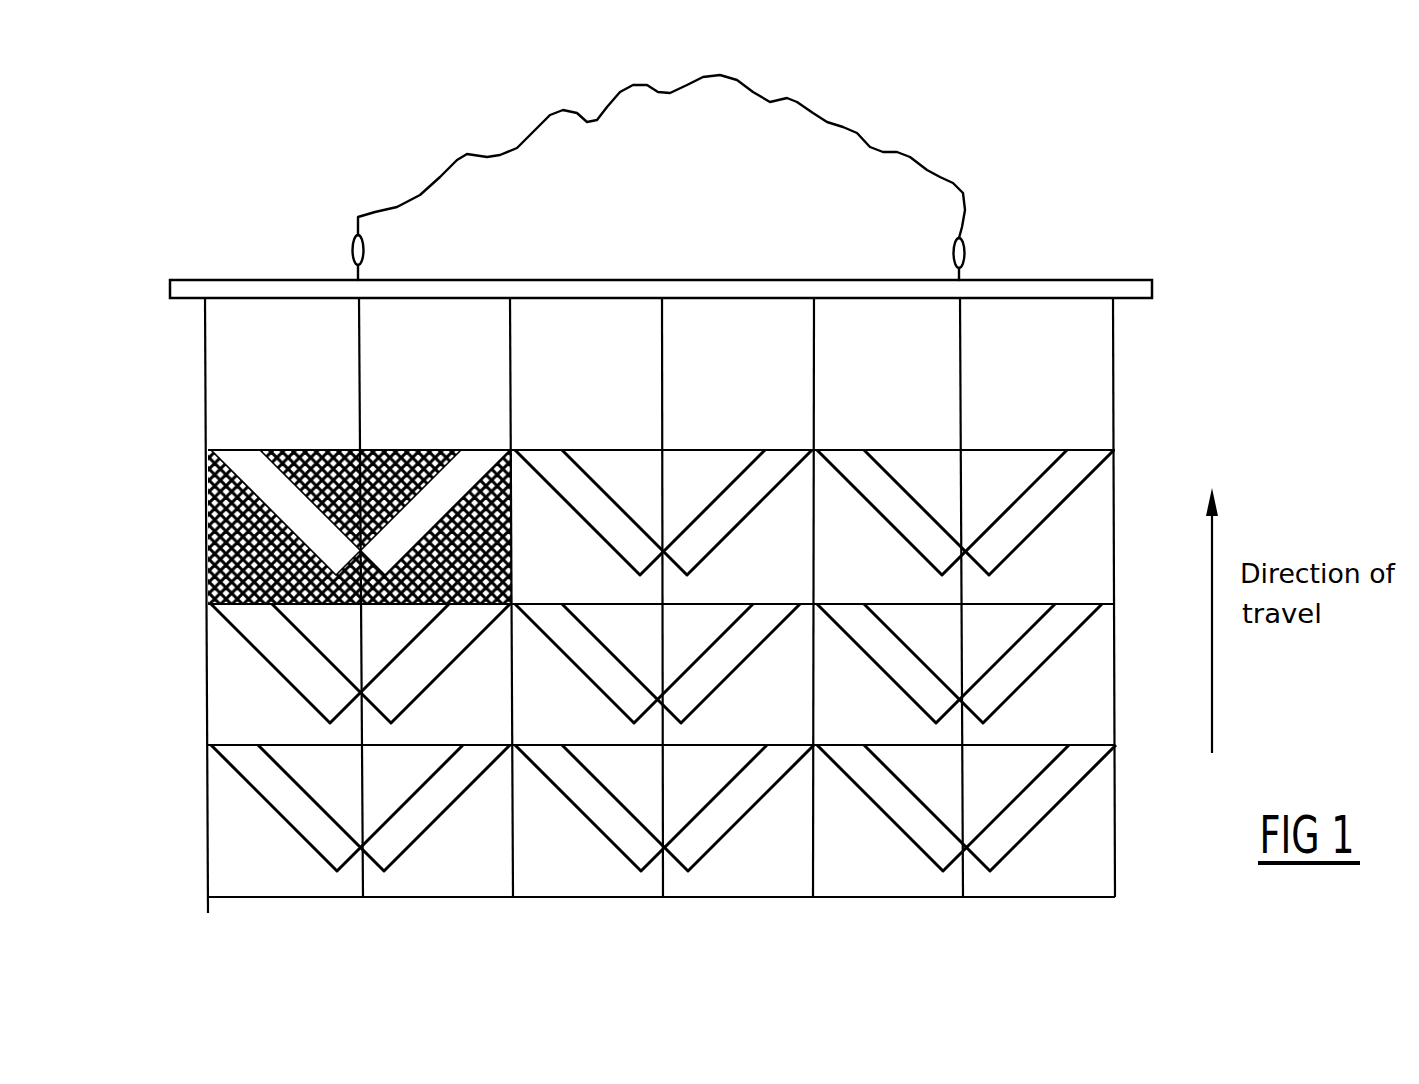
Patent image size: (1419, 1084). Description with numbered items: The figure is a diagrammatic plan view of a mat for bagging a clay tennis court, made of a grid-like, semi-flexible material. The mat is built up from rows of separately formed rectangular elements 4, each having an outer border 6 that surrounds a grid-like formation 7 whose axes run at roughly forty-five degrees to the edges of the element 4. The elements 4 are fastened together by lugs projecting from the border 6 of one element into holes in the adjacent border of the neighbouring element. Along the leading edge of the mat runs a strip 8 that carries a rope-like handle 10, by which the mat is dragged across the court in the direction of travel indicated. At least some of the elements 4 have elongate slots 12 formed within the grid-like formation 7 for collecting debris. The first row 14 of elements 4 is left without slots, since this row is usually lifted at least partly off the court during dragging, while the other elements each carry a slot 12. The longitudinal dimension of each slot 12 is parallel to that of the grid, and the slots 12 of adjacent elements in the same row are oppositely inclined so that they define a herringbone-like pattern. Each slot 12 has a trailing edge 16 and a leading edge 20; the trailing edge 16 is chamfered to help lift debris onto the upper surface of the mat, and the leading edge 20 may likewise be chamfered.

The rectangular element 4 is at (236, 840).
The outer border 6 is at (196, 790).
The grid-like formation 7 is at (226, 556).
The strip 8 is at (1002, 286).
The rope-like handle 10 is at (842, 110).
The elongate slot 12 is at (266, 636).
The first row 14 is at (228, 366).
The trailing edge 16 is at (258, 479).
The leading edge 20 is at (303, 666).